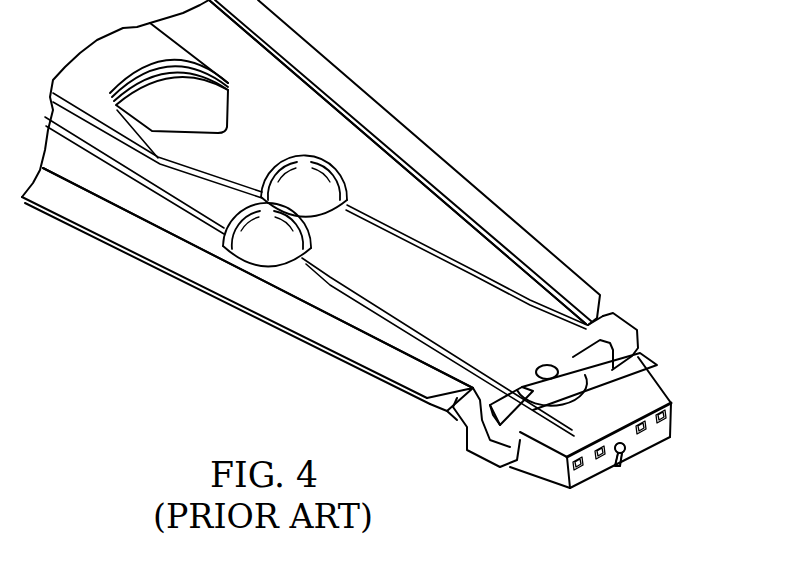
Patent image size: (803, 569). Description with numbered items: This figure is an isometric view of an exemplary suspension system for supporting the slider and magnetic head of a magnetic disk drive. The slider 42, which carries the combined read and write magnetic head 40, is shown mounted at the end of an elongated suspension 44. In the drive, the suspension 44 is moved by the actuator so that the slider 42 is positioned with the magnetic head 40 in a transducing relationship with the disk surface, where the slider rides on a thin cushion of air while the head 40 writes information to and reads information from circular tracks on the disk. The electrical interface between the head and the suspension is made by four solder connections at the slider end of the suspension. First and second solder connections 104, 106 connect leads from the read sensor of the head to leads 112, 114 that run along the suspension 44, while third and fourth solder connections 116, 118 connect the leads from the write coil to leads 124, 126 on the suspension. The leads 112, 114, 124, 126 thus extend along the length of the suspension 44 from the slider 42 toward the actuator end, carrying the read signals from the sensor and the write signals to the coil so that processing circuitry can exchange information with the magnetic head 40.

The magnetic head 40 is at (623, 470).
The slider 42 is at (514, 479).
The suspension 44 is at (456, 163).
The first solder connection 104 is at (567, 478).
The second solder connection 106 is at (665, 415).
The lead 112 is at (343, 288).
The lead 114 is at (507, 283).
The third solder connection 116 is at (596, 458).
The fourth solder connection 118 is at (642, 430).
The lead 124 is at (363, 289).
The lead 126 is at (430, 248).